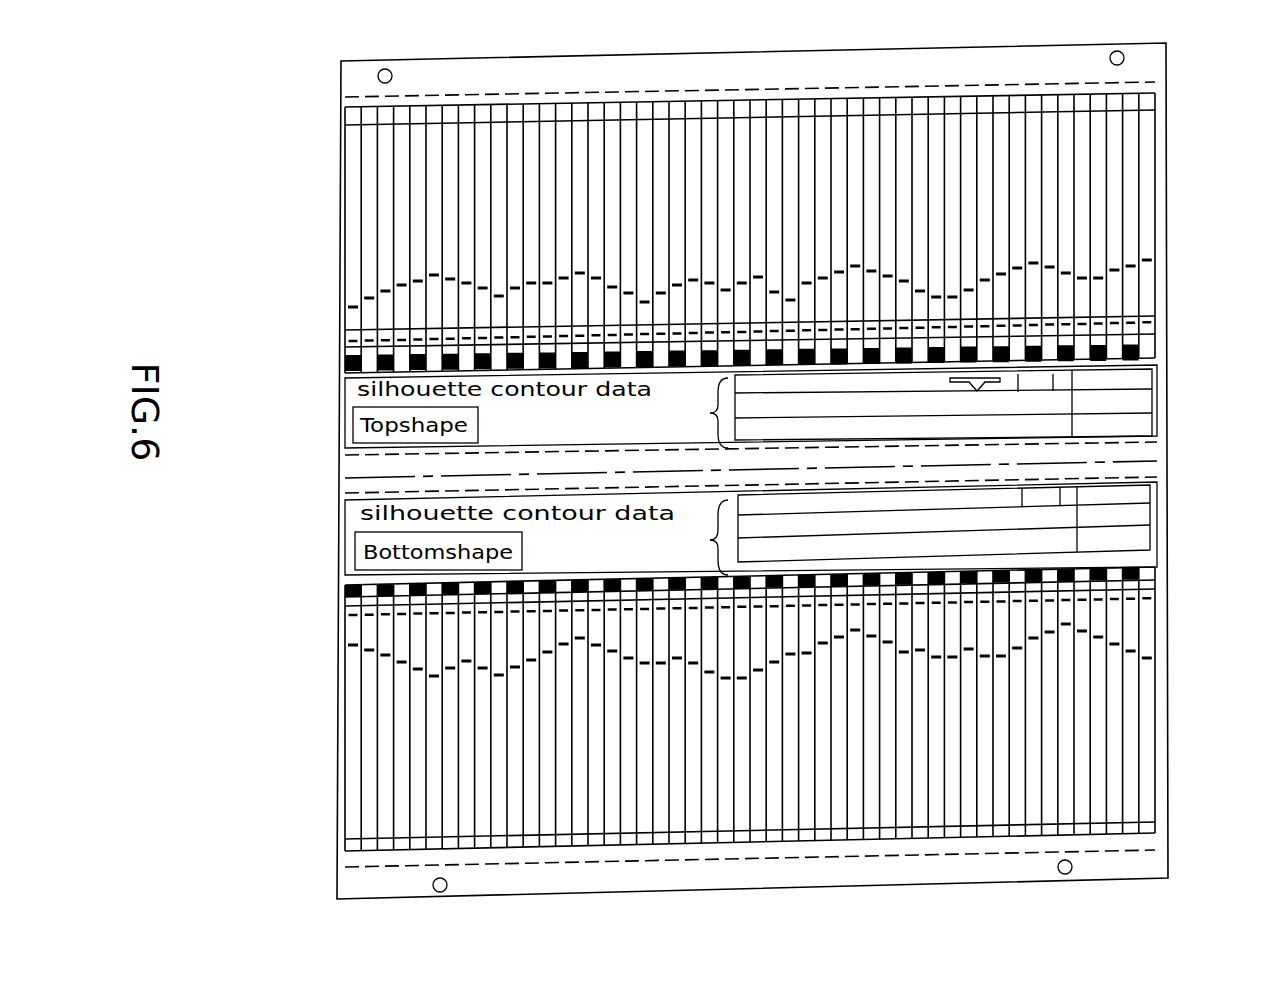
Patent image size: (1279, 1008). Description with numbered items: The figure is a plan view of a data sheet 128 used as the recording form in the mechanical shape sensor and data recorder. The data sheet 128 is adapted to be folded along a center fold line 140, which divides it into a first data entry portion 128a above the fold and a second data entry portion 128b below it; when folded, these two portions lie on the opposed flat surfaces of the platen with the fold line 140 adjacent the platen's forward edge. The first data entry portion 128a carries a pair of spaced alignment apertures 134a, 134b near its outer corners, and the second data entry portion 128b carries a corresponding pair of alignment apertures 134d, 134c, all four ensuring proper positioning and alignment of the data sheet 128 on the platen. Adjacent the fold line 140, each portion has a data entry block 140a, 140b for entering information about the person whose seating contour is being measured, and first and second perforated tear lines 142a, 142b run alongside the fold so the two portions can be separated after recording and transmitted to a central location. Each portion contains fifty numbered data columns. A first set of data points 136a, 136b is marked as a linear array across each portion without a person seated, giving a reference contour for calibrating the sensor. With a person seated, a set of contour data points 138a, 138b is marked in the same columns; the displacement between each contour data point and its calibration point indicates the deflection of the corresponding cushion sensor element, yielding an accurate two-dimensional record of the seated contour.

The data sheet 128 is at (335, 735).
The first data entry portion 128a is at (418, 197).
The second data entry portion 128b is at (417, 783).
The alignment aperture 134a is at (378, 75).
The alignment aperture 134b is at (1125, 58).
The alignment aperture 134c is at (1073, 867).
The alignment aperture 134d is at (432, 884).
The first set of data points 136a is at (679, 343).
The first set of data points 136b is at (687, 610).
The first set of contour data points 138a is at (677, 276).
The second set of contour data points 138b is at (686, 664).
The center fold line 140 is at (685, 465).
The data entry block 140a is at (715, 410).
The data entry block 140b is at (715, 540).
The first perforated tear line 142a is at (684, 428).
The second perforated tear line 142b is at (685, 494).